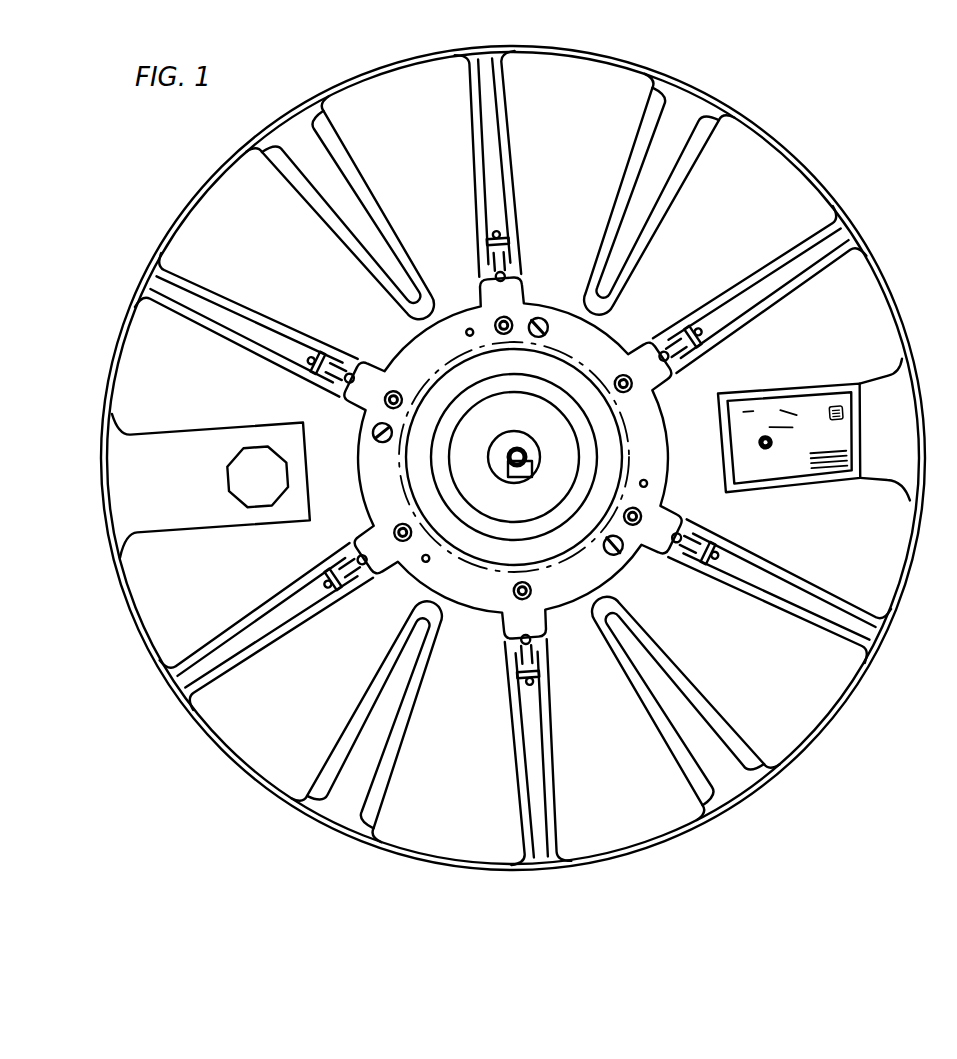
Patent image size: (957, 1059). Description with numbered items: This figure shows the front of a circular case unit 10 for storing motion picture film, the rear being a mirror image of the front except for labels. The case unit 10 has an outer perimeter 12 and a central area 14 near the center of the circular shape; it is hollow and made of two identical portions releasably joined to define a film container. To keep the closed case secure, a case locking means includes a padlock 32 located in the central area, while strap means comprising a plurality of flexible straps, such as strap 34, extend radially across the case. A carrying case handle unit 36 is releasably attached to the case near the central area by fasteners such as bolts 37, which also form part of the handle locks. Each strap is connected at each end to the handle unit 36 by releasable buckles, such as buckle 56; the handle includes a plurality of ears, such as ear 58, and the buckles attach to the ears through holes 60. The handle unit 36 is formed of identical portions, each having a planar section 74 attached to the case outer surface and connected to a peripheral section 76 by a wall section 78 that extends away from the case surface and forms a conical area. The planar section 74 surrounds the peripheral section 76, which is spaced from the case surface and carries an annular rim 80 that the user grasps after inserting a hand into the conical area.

The case unit 10 is at (760, 100).
The outer perimeter 12 is at (768, 136).
The central area 14 is at (498, 452).
The padlock 32 is at (527, 454).
The strap 34 is at (783, 588).
The carrying case handle unit 36 is at (601, 353).
The bolt 37 is at (532, 312).
The buckle 56 is at (699, 531).
The ear 58 is at (672, 520).
The hole 60 is at (675, 542).
The planar section 74 is at (650, 443).
The peripheral section 76 is at (504, 538).
The wall section 78 is at (567, 540).
The annular rim 80 is at (524, 528).